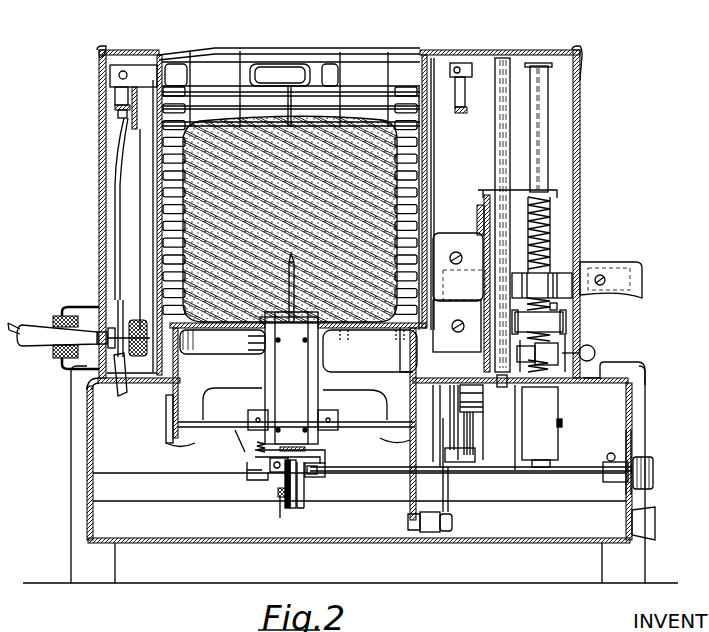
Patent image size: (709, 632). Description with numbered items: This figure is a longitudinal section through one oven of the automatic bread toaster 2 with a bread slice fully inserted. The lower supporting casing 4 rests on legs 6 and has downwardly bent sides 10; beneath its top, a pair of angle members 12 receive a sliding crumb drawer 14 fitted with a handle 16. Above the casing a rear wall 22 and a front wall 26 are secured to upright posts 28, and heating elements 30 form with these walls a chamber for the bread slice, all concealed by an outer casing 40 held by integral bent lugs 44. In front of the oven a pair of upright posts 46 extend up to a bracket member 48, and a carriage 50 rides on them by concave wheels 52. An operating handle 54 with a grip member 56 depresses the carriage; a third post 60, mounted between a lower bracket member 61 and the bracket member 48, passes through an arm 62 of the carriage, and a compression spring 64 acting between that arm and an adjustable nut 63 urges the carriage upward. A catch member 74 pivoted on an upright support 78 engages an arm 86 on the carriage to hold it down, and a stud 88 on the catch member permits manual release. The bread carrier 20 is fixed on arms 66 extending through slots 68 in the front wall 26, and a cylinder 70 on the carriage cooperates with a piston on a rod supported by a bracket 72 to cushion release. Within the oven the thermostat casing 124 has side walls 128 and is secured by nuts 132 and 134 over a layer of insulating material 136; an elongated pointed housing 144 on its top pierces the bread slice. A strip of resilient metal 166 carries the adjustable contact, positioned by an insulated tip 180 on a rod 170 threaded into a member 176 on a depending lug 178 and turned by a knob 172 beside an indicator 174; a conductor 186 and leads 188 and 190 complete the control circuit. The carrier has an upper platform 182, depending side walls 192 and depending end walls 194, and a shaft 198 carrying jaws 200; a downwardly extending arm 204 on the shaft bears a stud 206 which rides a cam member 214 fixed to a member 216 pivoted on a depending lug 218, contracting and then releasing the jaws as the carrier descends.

The automatic bread toaster 2 is at (89, 97).
The lower supporting casing 4 is at (642, 378).
The legs 6 is at (71, 539).
The sides 10 is at (87, 456).
The angle members 12 is at (100, 435).
The sliding drawer 14 is at (246, 548).
The handle 16 is at (650, 524).
The bread carrier 20 is at (160, 409).
The rear wall 22 is at (153, 252).
The front wall 26 is at (428, 162).
The upright posts 28 is at (142, 196).
The heating elements 30 is at (355, 107).
The outer casing 40 is at (592, 137).
The integral bent lugs 44 is at (100, 383).
The upright posts 46 is at (507, 75).
The bracket member 48 is at (580, 65).
The carriage 50 is at (466, 225).
The wheels 52 is at (505, 200).
The operating handle 54 is at (566, 272).
The grip member 56 is at (633, 262).
The third post 60 is at (548, 118).
The lower bracket member 61 is at (558, 453).
The arm 62 is at (550, 190).
The adjustable nut 63 is at (562, 429).
The compression spring 64 is at (552, 226).
The arms 66 is at (432, 338).
The slots 68 is at (432, 212).
The cylinder 70 is at (452, 360).
The bracket 72 is at (476, 456).
The catch member 74 is at (575, 311).
The upright support 78 is at (566, 350).
The arm 86 is at (565, 321).
The stud 88 is at (590, 350).
The casing 124 is at (259, 376).
The side walls 128 is at (318, 411).
The nut 132 is at (246, 482).
The nut 134 is at (325, 458).
The insulating material 136 is at (270, 466).
The elongated housing 144 is at (303, 280).
The strip of resilient metal 166 is at (290, 510).
The rod 170 is at (582, 476).
The knob 172 is at (653, 470).
The indicator 174 is at (633, 445).
The member 176 is at (318, 478).
The depending lug 178 is at (305, 449).
The tip 180 is at (310, 480).
The upper platform 182 is at (226, 333).
The conductor 186 is at (277, 491).
The lead 188 is at (256, 446).
The lead 190 is at (285, 527).
The depending side walls 192 is at (222, 386).
The depending end walls 194 is at (168, 423).
The shaft 198 is at (240, 447).
The jaws 200 is at (257, 343).
The downwardly extending arm 204 is at (410, 492).
The stud 206 is at (454, 523).
The cam member 214 is at (458, 496).
The member 216 is at (474, 431).
The depending lug 218 is at (483, 411).